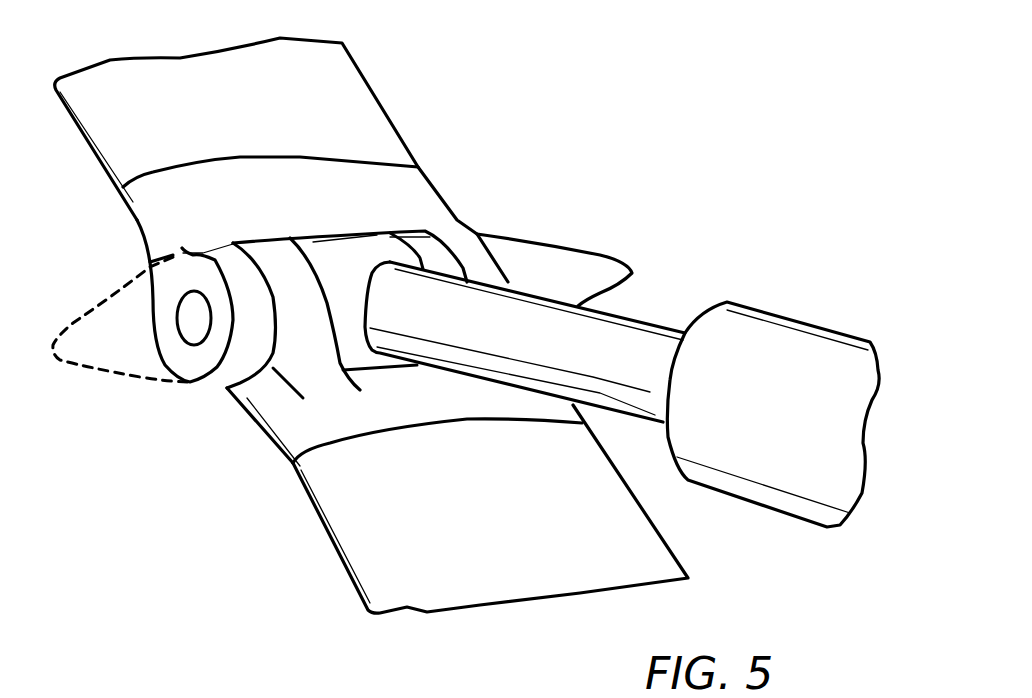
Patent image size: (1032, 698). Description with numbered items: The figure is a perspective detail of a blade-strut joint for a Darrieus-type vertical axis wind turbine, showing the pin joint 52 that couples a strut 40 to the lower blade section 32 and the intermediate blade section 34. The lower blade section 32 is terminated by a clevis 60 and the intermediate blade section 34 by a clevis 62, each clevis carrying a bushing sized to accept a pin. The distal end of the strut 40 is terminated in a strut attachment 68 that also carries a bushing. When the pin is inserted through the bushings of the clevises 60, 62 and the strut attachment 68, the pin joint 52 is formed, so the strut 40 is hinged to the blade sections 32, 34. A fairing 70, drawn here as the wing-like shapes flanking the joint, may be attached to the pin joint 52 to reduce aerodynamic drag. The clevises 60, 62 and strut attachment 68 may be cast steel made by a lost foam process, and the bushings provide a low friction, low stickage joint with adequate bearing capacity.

The lower blade section 32 is at (337, 567).
The intermediate blade section 34 is at (373, 88).
The strut 40 is at (763, 313).
The pin joint 52 is at (177, 410).
The clevis 60 is at (267, 445).
The clevis 62 is at (140, 233).
The strut attachment 68 is at (392, 242).
The fairing 70 is at (540, 242).